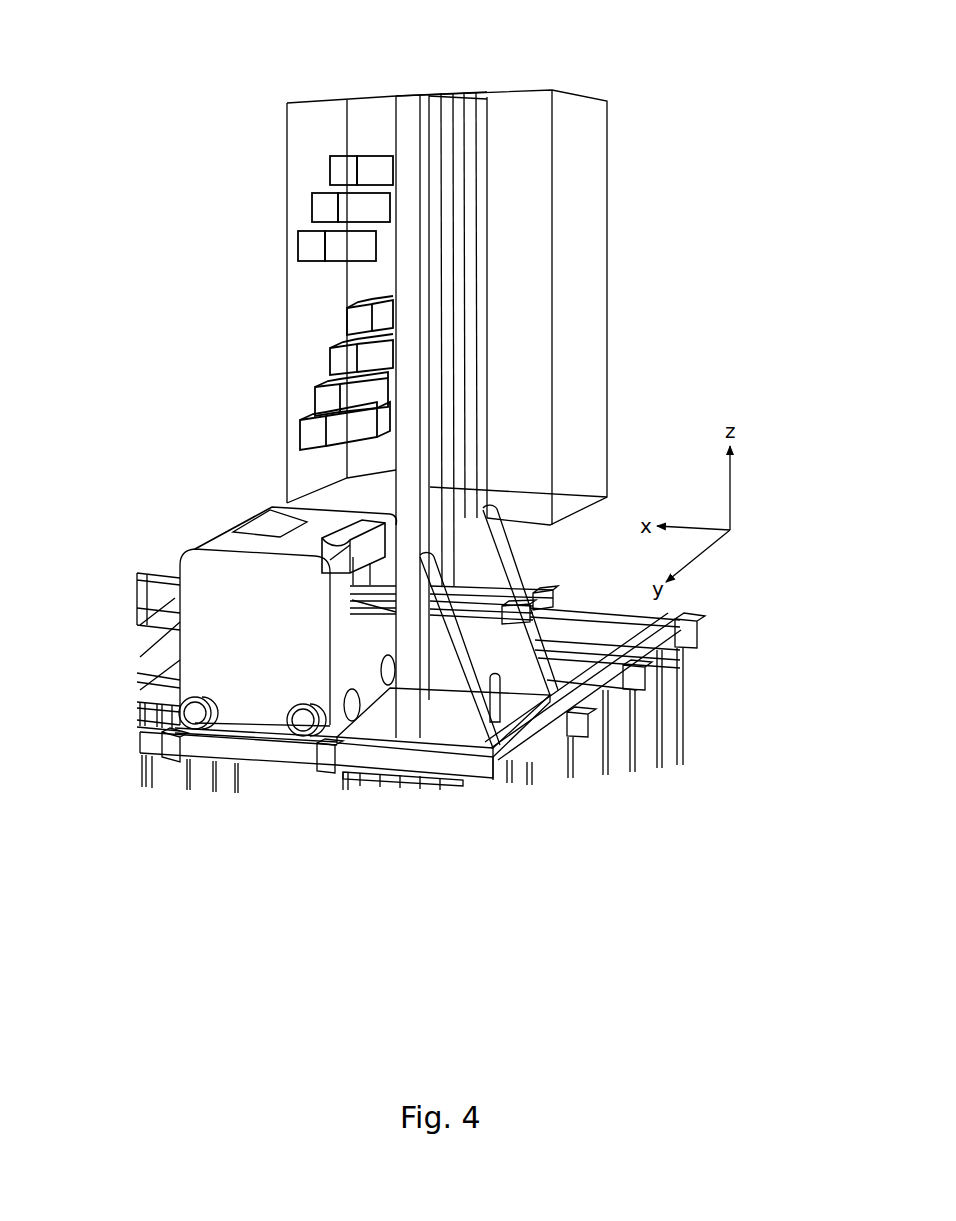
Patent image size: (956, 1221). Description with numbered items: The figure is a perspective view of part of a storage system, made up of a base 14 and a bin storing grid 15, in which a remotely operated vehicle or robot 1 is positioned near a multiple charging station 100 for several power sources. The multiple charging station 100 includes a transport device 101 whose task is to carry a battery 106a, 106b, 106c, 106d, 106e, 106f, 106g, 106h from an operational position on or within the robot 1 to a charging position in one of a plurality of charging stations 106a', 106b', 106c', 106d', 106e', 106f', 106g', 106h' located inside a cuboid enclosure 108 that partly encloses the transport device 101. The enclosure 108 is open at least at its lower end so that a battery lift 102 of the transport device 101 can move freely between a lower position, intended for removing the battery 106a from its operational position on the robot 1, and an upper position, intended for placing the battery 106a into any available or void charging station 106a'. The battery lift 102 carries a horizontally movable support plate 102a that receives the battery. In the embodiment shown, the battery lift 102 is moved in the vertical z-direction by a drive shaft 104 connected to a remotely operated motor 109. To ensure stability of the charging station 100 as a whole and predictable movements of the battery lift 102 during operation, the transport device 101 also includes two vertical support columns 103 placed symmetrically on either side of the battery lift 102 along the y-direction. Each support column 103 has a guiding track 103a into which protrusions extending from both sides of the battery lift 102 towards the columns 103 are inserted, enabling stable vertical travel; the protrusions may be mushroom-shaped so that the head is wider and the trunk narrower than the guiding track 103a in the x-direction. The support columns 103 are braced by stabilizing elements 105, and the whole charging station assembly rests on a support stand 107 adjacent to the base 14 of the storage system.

The multiple charging station 100 is at (600, 70).
The transport device 101 is at (577, 395).
The vertical support columns 103 is at (488, 190).
The guiding track 103a is at (465, 172).
The drive shaft 104 is at (447, 207).
The enclosure 108 is at (322, 99).
The charging station 106a' is at (368, 100).
The battery 106a is at (283, 525).
The battery 106b is at (242, 155).
The charging station 106b' is at (288, 155).
The battery 106c is at (223, 201).
The charging station 106c' is at (277, 201).
The battery 106d is at (214, 241).
The charging station 106d' is at (268, 241).
The battery 106e is at (249, 309).
The charging station 106e' is at (288, 307).
The battery 106f is at (241, 351).
The charging station 106f' is at (285, 349).
The battery 106g is at (229, 392).
The charging station 106g' is at (281, 390).
The battery 106h is at (223, 429).
The charging station 106h' is at (283, 424).
The battery lift 102 is at (578, 592).
The support plate 102a is at (352, 607).
The stabilizing elements 105 is at (460, 730).
The support stand 107 is at (367, 730).
The motor 109 is at (502, 690).
The remotely operated vehicle 1 is at (185, 522).
The base 14 is at (717, 630).
The bin storing grid 15 is at (708, 728).